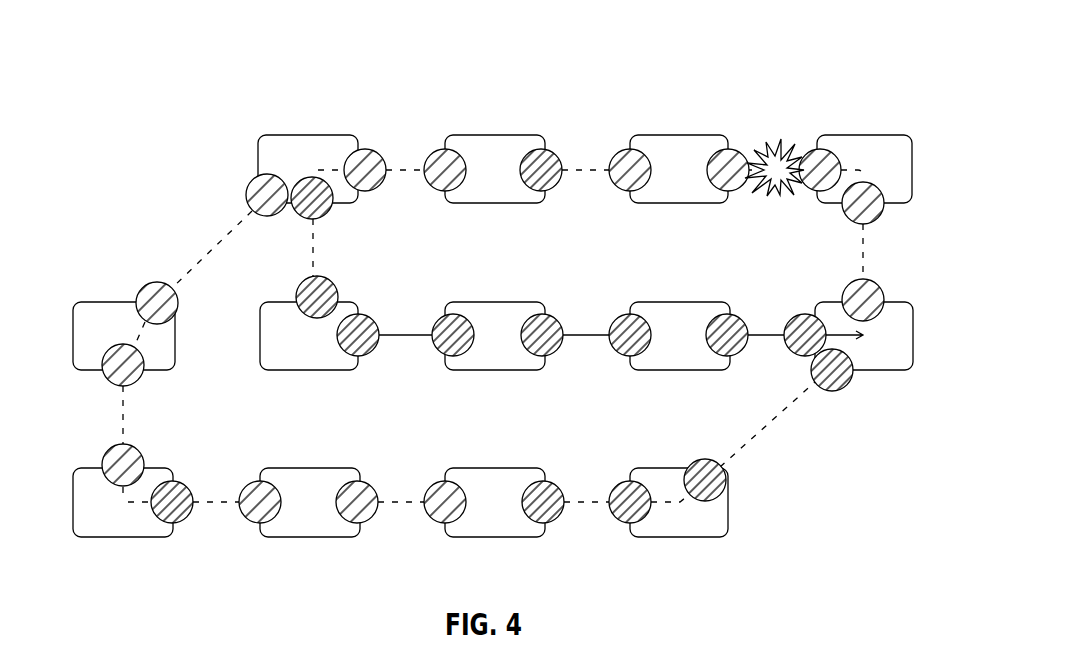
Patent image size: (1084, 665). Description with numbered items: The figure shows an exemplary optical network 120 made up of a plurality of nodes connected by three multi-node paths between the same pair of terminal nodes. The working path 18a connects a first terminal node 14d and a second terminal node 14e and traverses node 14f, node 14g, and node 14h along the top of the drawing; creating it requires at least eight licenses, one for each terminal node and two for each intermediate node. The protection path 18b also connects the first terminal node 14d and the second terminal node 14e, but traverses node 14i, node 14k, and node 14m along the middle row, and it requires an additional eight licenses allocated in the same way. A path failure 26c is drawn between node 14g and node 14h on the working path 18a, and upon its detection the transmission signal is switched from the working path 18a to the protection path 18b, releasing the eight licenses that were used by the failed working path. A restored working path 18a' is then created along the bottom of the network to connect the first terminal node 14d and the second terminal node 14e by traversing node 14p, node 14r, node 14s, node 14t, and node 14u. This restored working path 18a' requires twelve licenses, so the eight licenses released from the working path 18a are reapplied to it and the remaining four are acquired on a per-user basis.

The optical network 120 is at (880, 30).
The first terminal node 14d is at (301, 135).
The second terminal node 14e is at (893, 302).
The node 14f is at (490, 135).
The node 14g is at (679, 135).
The node 14h is at (868, 135).
The node 14i is at (283, 302).
The node 14k is at (494, 302).
The node 14m is at (678, 302).
The node 14p is at (106, 302).
The node 14r is at (155, 468).
The node 14s is at (308, 468).
The node 14t is at (493, 468).
The node 14u is at (666, 468).
The working path 18a is at (590, 138).
The restored working path 18a' is at (783, 427).
The protection path 18b is at (757, 333).
The path failure 26c is at (789, 152).